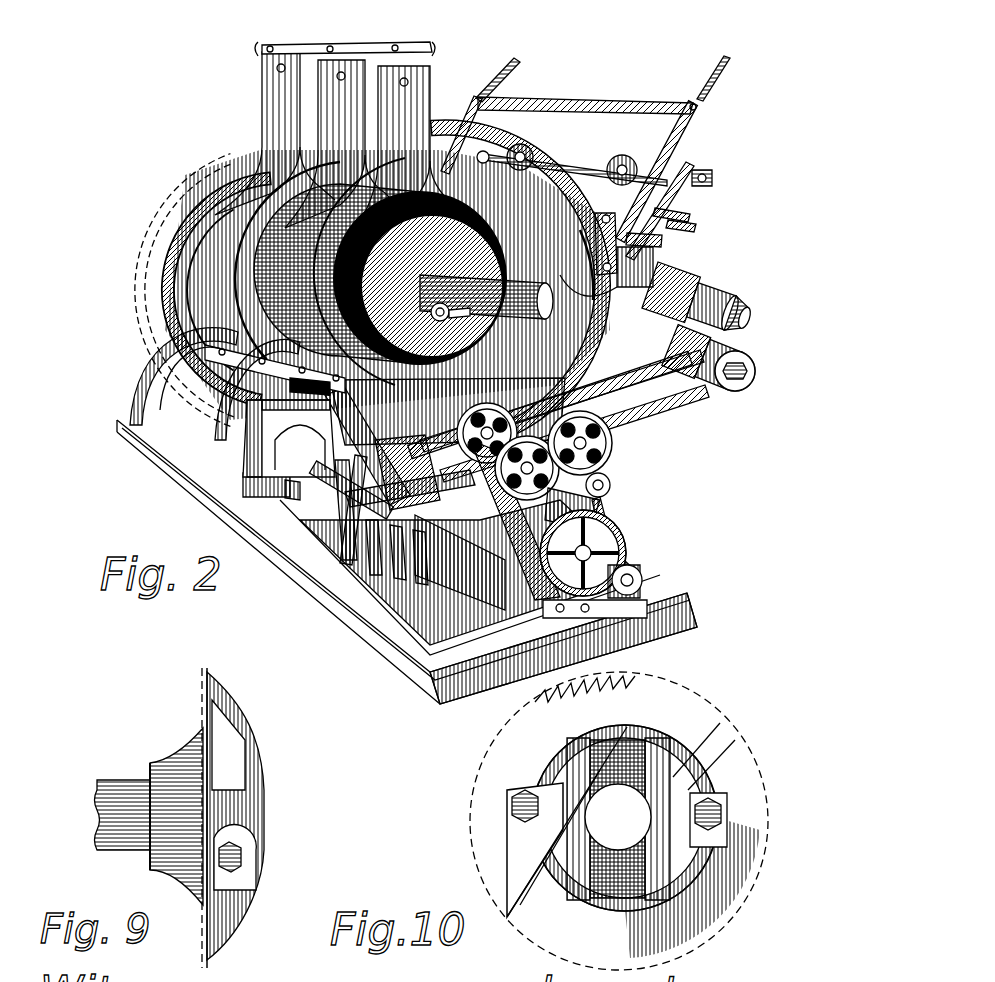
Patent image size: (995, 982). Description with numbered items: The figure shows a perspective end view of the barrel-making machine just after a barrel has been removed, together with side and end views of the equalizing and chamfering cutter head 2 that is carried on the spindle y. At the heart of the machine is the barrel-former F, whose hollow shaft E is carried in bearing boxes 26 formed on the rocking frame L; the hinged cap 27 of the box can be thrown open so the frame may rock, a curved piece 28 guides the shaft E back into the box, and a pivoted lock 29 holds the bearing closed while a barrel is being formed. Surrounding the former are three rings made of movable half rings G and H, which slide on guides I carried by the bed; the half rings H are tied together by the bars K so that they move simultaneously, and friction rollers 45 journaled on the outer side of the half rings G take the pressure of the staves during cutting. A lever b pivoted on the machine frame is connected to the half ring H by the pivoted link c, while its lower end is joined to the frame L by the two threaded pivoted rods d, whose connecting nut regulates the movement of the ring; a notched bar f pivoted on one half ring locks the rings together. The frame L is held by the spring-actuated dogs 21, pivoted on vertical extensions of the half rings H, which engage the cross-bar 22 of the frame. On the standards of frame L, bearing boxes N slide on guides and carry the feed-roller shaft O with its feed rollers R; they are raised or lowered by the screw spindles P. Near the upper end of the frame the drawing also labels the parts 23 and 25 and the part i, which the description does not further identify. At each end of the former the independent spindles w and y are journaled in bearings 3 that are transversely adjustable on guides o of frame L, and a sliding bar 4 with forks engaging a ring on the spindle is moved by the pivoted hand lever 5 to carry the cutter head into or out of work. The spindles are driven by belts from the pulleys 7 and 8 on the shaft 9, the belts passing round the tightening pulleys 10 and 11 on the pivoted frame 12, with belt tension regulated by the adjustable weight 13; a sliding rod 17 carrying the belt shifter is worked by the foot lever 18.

In FIG. 2, the spring-actuated dogs 21 is at (397, 62).
In FIG. 2, the barrel-former F is at (385, 215).
In FIG. 2, the cross-bar 22 is at (566, 106).
In FIG. 2, the screw spindles P is at (727, 78).
In FIG. 2, the rocking frame L is at (700, 115).
In FIG. 2, the feed-roller shaft O is at (707, 180).
In FIG. 2, the bearing boxes N is at (683, 197).
In FIG. 2, the collar 23 is at (672, 214).
In FIG. 2, the friction rollers 45 is at (612, 222).
In FIG. 2, the collar 25 is at (680, 226).
In FIG. 2, the pivoted lock 29 is at (662, 240).
In FIG. 2, the bearing boxes 26 is at (655, 280).
In FIG. 2, the sliding bar 4 is at (713, 288).
In FIG. 2, the hand lever 5 is at (731, 306).
In FIG. 2, the guides o is at (747, 314).
In FIG. 2, the spindle w is at (749, 318).
In FIG. 2, the spindle y is at (738, 378).
In FIG. 9, the spindle y is at (97, 820).
In FIG. 10, the spindle y is at (646, 841).
In FIG. 2, the bearings 3 is at (665, 378).
In FIG. 2, the curved piece 28 is at (653, 397).
In FIG. 2, the tightening pulley 11 is at (612, 435).
In FIG. 2, the tightening pulley 10 is at (560, 460).
In FIG. 2, the pivoted frame 12 is at (250, 247).
In FIG. 2, the pulley 8 is at (600, 504).
In FIG. 2, the pulley 7 is at (626, 550).
In FIG. 2, the shaft 9 is at (650, 583).
In FIG. 2, the half rings H is at (262, 213).
In FIG. 2, the adjustable weight 13 is at (243, 277).
In FIG. 2, the bars K is at (190, 362).
In FIG. 2, the guides I is at (200, 440).
In FIG. 2, the sliding rod 17 is at (289, 438).
In FIG. 2, the lever b is at (287, 493).
In FIG. 2, the pivoted link c is at (340, 503).
In FIG. 2, the foot lever 18 is at (333, 533).
In FIG. 2, the pivoted rods d is at (372, 560).
In FIG. 2, the notched bar f is at (395, 560).
In FIG. 2, the strut i is at (420, 570).
In FIG. 2, the half rings G is at (521, 282).
In FIG. 2, the cap 27 is at (573, 265).
In FIG. 2, the shaft E is at (510, 275).
In FIG. 2, the feed rollers R is at (624, 156).
In FIG. 9, the equalizing and chamfering cutter head 2 is at (257, 843).
In FIG. 10, the equalizing and chamfering cutter head 2 is at (507, 830).